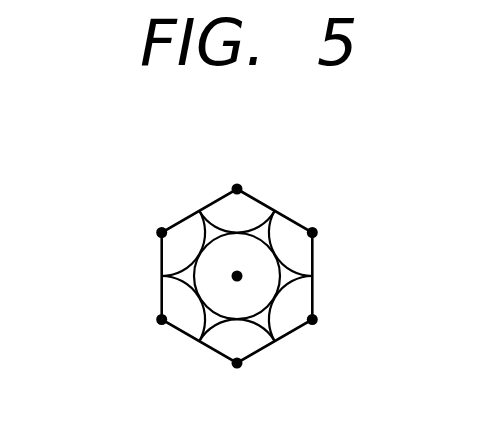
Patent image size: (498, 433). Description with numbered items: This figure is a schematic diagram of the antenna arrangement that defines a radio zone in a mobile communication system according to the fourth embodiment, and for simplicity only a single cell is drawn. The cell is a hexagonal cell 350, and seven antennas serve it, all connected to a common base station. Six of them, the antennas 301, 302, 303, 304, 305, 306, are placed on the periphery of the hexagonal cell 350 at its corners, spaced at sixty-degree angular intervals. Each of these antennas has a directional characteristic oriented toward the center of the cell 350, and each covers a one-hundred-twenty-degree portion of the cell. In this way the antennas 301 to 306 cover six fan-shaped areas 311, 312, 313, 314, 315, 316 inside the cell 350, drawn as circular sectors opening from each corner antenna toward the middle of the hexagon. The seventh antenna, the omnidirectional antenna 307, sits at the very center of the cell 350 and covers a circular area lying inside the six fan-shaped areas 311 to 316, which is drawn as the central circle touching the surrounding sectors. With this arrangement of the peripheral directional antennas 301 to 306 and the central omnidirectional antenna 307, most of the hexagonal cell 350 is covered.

The hexagonal cell 350 is at (263, 201).
The omnidirectional antenna 307 is at (232, 271).
The antenna 301 is at (237, 366).
The antenna 302 is at (160, 321).
The antenna 303 is at (156, 232).
The antenna 304 is at (237, 188).
The antenna 305 is at (315, 232).
The antenna 306 is at (314, 321).
The fan-shaped area 311 is at (255, 345).
The fan-shaped area 312 is at (190, 328).
The fan-shaped area 313 is at (167, 265).
The fan-shaped area 314 is at (222, 207).
The fan-shaped area 315 is at (287, 220).
The fan-shaped area 316 is at (308, 287).